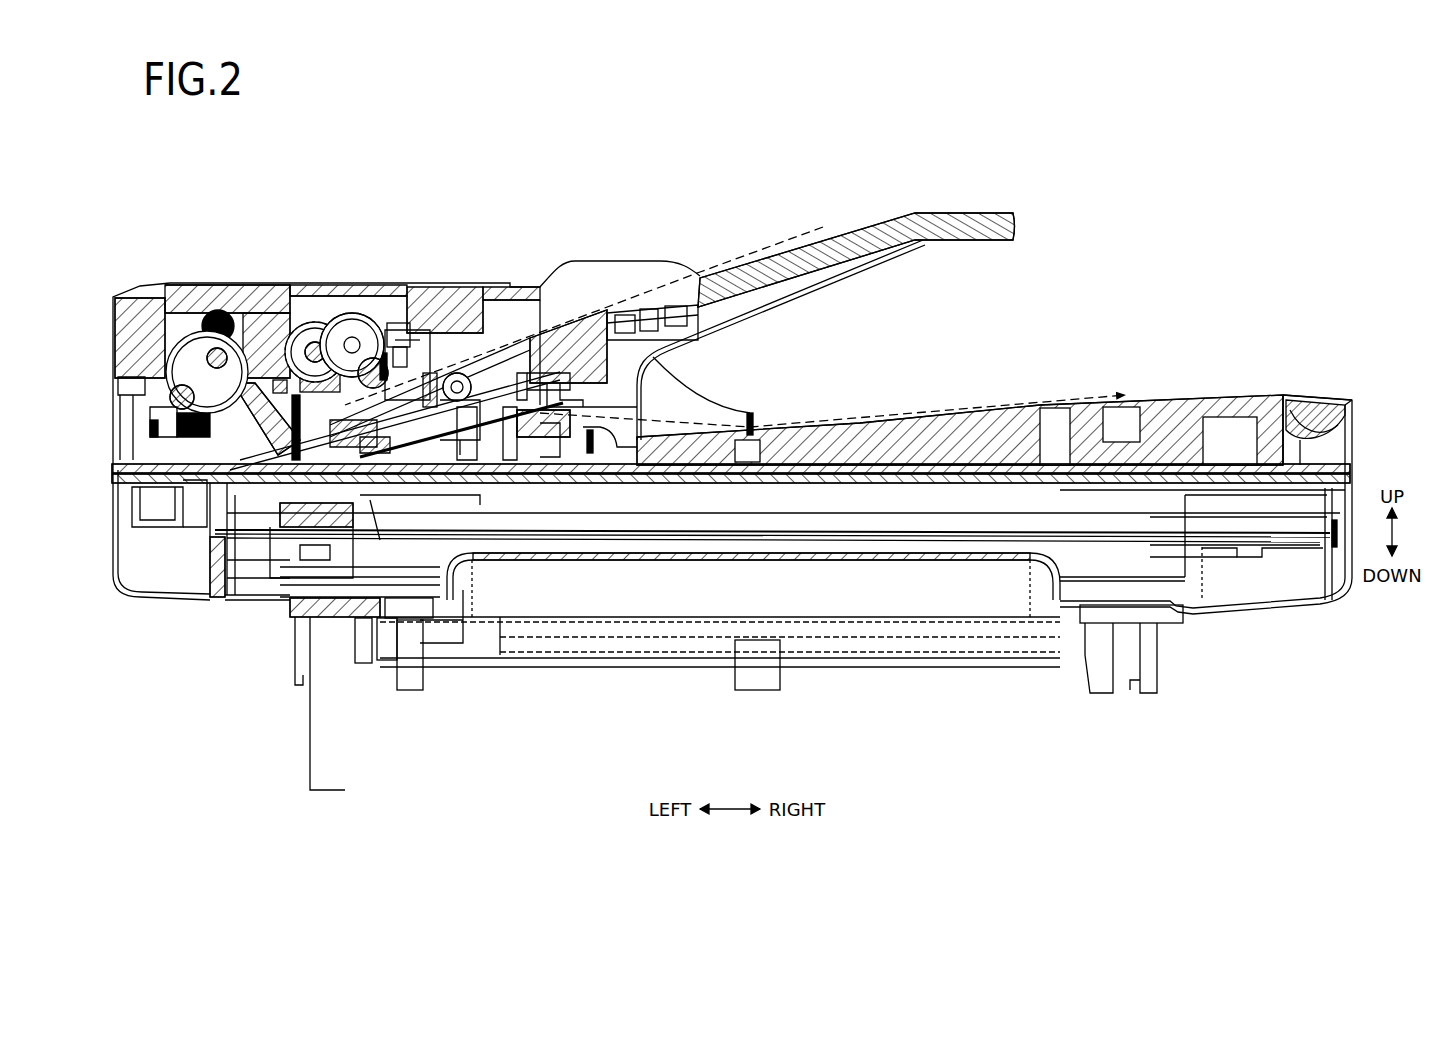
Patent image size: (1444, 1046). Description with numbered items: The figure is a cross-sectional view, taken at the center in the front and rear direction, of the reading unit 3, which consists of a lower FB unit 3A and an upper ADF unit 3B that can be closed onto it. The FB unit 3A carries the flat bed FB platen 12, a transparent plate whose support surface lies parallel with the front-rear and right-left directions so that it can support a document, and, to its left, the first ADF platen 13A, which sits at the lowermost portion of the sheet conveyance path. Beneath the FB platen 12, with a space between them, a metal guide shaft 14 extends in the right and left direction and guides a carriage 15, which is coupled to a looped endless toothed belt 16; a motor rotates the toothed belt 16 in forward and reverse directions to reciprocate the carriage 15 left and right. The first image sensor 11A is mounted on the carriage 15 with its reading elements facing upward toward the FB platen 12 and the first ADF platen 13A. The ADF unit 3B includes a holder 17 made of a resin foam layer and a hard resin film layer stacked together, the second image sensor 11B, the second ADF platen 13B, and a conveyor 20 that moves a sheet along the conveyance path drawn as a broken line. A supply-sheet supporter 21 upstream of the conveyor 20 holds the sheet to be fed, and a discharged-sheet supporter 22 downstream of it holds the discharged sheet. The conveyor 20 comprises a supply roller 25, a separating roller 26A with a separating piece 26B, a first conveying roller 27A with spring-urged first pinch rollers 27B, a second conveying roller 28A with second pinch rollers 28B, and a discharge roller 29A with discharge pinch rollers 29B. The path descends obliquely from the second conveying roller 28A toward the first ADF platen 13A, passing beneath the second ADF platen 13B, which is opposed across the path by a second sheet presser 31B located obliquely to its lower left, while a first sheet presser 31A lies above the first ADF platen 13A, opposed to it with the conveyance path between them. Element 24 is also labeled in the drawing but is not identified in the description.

The reading unit 3 is at (1215, 228).
The FB unit 3A is at (1333, 603).
The ADF unit 3B is at (1310, 410).
The first image sensor 11A is at (292, 495).
The second image sensor 11B is at (238, 470).
The FB platen 12 is at (600, 480).
The first ADF platen 13A is at (242, 470).
The second ADF platen 13B is at (222, 470).
The guide shaft 14 is at (823, 523).
The carriage 15 is at (345, 528).
The toothed belt 16 is at (897, 540).
The holder 17 is at (667, 485).
The conveyor 20 is at (320, 300).
The supply-sheet supporter 21 is at (705, 252).
The discharged-sheet supporter 22 is at (760, 400).
The feed roller 24 is at (406, 300).
The supply roller 25 is at (398, 392).
The separating roller 26A is at (375, 362).
The separating piece 26B is at (300, 335).
The first conveying roller 27A is at (190, 352).
The first pinch rollers 27B is at (217, 320).
The second conveying roller 28A is at (180, 355).
The second pinch rollers 28B is at (152, 395).
The discharge roller 29A is at (455, 398).
The discharge pinch rollers 29B is at (487, 378).
The first sheet presser 31A is at (385, 492).
The second sheet presser 31B is at (168, 430).